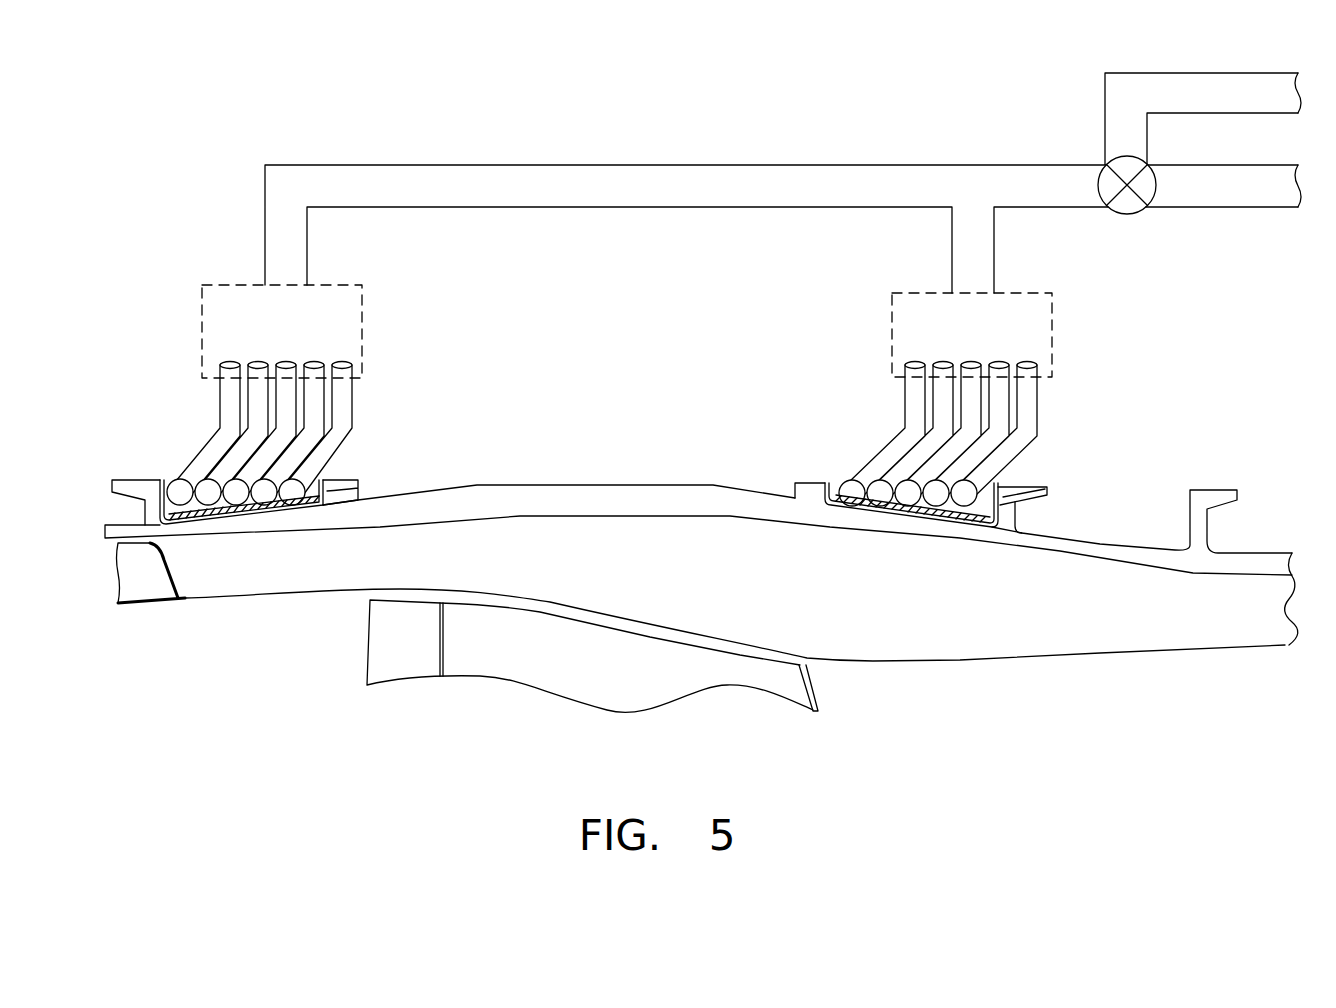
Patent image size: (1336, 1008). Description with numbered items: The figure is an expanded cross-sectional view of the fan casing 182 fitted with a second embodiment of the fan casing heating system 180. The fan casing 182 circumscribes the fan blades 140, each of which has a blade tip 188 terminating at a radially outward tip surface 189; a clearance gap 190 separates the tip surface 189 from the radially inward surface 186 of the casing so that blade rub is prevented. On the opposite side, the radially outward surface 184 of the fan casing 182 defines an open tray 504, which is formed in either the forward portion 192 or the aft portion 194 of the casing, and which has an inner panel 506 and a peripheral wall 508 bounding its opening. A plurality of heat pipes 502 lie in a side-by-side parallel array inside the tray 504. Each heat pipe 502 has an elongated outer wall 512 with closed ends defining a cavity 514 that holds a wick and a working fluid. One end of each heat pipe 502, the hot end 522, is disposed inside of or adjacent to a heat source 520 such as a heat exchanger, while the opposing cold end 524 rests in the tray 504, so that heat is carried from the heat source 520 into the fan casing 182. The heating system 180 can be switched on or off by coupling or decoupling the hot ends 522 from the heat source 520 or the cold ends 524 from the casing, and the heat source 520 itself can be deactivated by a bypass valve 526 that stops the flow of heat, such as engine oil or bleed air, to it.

The fan blade 140 is at (451, 656).
The fan casing heating system 180 is at (746, 304).
The fan casing 182 is at (527, 498).
The radially outward surface 184 is at (1074, 541).
The radially inward surface 186 is at (1040, 656).
The blade tip 188 is at (338, 646).
The tip surface 189 is at (590, 623).
The clearance gap 190 is at (823, 665).
The forward portion 192 is at (370, 440).
The aft portion 194 is at (834, 421).
The heat pipe 502 is at (338, 387).
The open tray 504 is at (169, 460).
The inner panel 506 is at (146, 498).
The peripheral wall 508 is at (356, 480).
The outer wall 512 is at (197, 458).
The cavity 514 is at (237, 517).
The heat source 520 is at (330, 282).
The hot end 522 is at (1054, 351).
The cold end 524 is at (920, 515).
The bypass valve 526 is at (1139, 213).